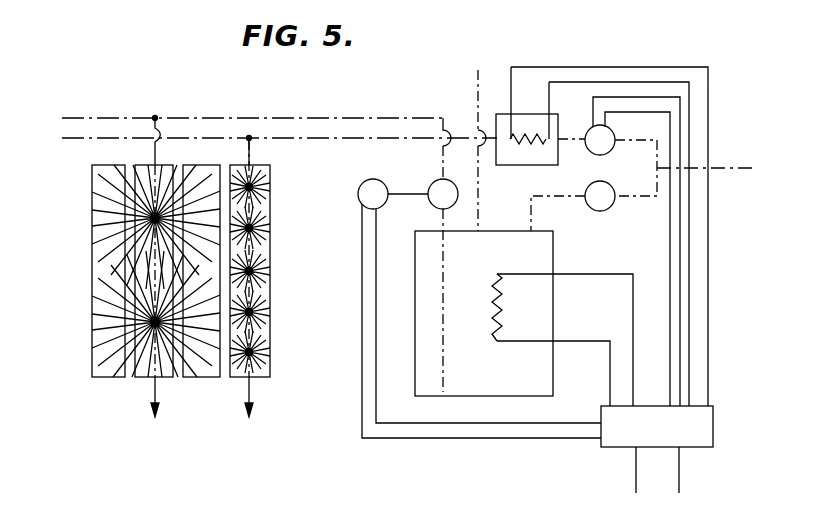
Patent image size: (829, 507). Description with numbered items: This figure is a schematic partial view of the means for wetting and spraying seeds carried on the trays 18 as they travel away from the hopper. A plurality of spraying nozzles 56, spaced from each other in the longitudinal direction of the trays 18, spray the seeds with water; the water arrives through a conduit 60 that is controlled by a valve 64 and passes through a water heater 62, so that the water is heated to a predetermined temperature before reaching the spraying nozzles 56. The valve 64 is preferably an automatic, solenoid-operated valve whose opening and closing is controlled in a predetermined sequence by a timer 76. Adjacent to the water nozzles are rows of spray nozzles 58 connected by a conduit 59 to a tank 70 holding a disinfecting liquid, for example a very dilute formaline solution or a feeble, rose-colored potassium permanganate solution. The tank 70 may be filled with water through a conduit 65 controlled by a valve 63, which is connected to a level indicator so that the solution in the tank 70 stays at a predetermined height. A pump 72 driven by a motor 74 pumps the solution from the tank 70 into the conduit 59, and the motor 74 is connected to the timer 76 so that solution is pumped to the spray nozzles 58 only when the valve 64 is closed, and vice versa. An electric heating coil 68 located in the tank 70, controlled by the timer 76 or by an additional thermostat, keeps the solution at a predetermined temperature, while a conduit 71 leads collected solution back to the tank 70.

The trays 18 is at (165, 377).
The spraying nozzles 56 is at (270, 335).
The spray nozzles 58 is at (92, 313).
The conduit 59 is at (330, 119).
The conduit 60 is at (395, 138).
The water heater 62 is at (518, 162).
The valve 63 is at (597, 210).
The valve 64 is at (598, 154).
The conduit 65 is at (640, 200).
The electric heating coil 68 is at (489, 341).
The tank 70 is at (553, 381).
The conduit 71 is at (478, 70).
The pump 72 is at (430, 203).
The motor 74 is at (357, 203).
The timer 76 is at (612, 450).